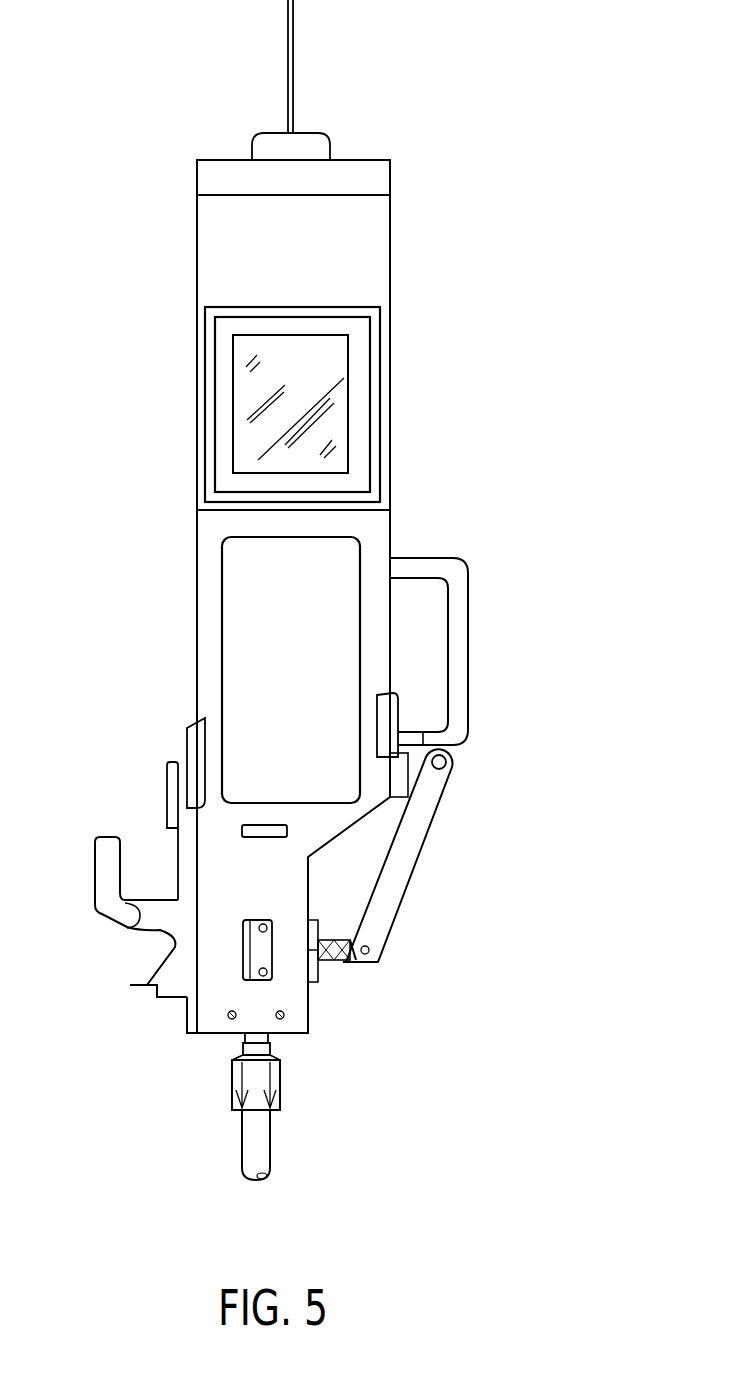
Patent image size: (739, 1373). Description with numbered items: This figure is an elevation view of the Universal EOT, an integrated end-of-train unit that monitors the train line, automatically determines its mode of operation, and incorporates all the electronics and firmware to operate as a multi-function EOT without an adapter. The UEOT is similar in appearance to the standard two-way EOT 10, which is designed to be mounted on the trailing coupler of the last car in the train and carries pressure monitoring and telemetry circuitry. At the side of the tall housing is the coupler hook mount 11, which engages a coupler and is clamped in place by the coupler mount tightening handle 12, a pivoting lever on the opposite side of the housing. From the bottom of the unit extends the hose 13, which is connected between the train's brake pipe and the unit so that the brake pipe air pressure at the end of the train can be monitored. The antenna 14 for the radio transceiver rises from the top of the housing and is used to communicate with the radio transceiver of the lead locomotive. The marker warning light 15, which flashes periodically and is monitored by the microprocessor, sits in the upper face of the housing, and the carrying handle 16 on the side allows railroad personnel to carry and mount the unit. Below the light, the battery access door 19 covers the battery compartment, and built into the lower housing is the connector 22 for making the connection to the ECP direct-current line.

The EOT 10 is at (536, 210).
The coupler hook mount 11 is at (93, 862).
The coupler mount tightening handle 12 is at (455, 765).
The hose 13 is at (270, 1133).
The antenna 14 is at (289, 42).
The marker warning light 15 is at (233, 388).
The carrying handle 16 is at (468, 588).
The battery access door 19 is at (316, 671).
The connector 22 is at (270, 838).